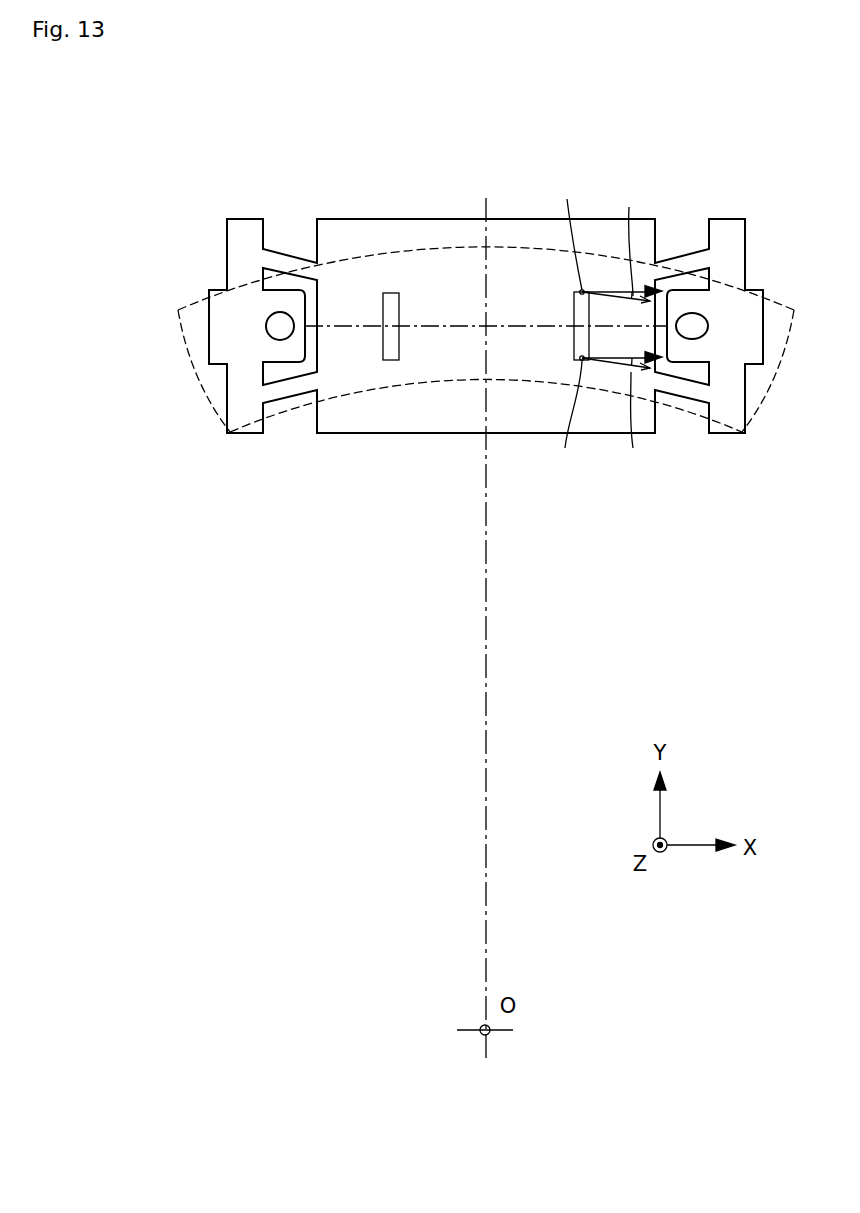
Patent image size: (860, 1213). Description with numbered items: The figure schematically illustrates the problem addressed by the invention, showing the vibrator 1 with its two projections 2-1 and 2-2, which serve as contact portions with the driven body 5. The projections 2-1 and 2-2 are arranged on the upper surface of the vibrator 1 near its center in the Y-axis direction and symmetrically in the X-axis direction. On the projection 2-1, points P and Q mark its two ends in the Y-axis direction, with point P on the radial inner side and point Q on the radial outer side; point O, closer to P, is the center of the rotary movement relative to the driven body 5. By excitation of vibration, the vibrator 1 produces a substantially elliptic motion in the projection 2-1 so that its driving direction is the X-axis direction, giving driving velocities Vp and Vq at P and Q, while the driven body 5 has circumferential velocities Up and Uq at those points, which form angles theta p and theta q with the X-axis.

The vibrator 1 is at (447, 415).
The driven body 5 is at (453, 267).
The projection 2-1 is at (578, 310).
The projection 2-2 is at (392, 293).